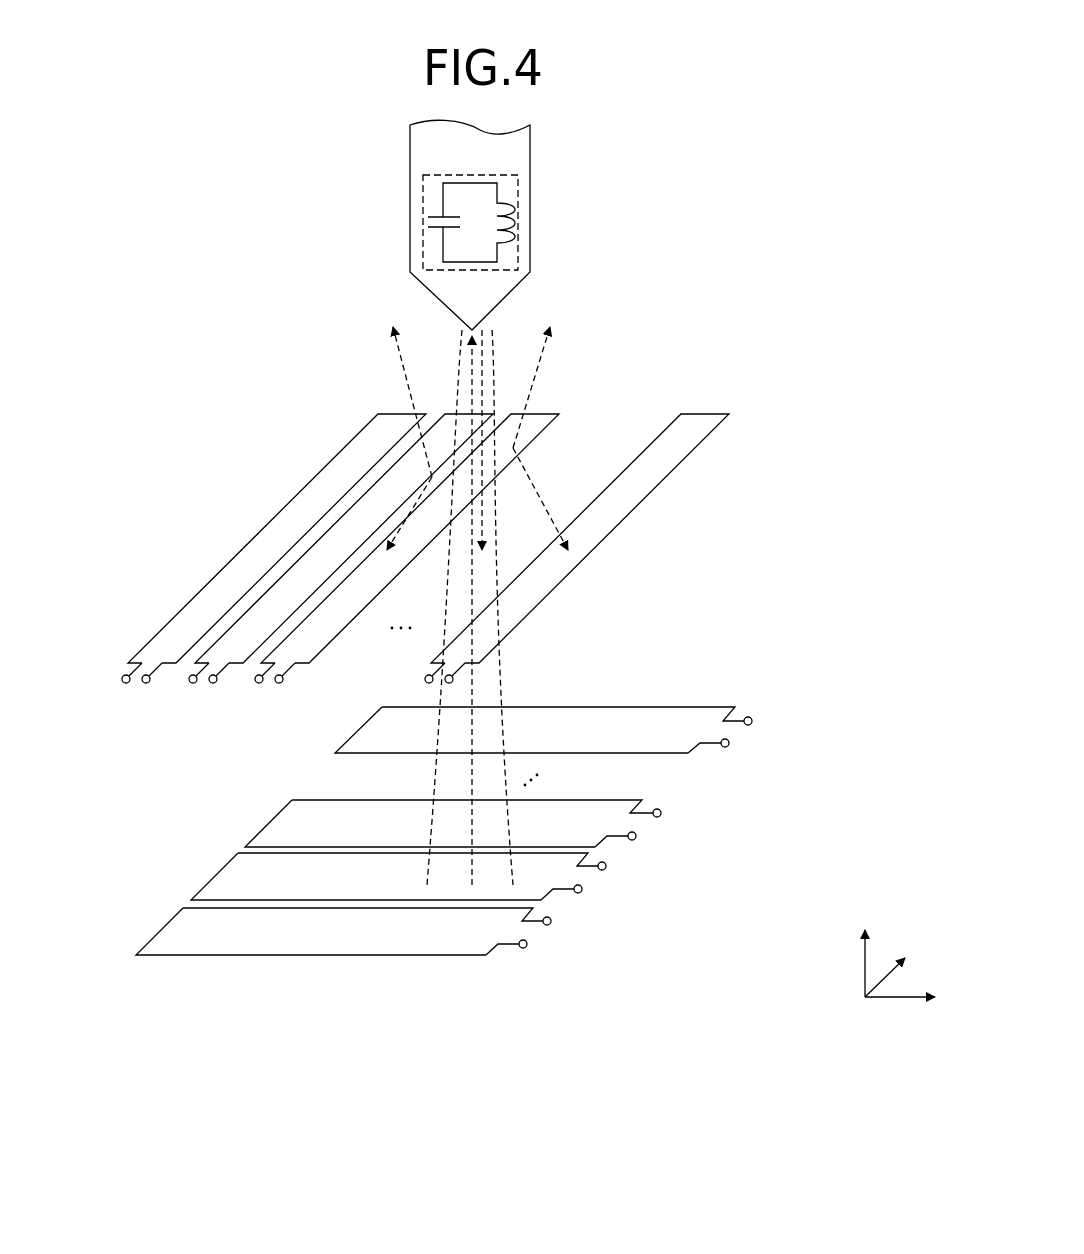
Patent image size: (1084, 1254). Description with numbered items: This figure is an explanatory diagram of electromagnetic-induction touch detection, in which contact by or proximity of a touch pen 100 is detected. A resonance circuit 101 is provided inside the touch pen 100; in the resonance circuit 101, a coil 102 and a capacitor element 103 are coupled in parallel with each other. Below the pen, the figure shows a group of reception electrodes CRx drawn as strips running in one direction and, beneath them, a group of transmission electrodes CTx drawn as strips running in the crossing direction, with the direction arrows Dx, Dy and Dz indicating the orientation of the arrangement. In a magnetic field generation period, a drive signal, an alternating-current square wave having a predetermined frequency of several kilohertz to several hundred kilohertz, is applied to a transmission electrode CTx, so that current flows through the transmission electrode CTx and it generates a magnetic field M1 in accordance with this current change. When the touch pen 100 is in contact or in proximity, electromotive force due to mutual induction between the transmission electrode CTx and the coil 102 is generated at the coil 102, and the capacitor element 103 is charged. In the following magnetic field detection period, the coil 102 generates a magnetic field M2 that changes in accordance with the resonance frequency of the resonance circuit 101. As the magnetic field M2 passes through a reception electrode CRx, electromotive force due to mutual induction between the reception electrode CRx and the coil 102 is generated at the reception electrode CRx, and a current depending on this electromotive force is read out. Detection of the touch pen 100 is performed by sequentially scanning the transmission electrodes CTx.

The touch pen 100 is at (531, 152).
The resonance circuit 101 is at (518, 252).
The coil 102 is at (514, 211).
The capacitor element 103 is at (443, 218).
The magnetic field M1 is at (545, 348).
The magnetic field M2 is at (493, 338).
The reception electrode CRx is at (318, 533).
The transmission electrode CTx is at (352, 745).
The X direction Dx is at (917, 1003).
The Y direction Dy is at (887, 967).
The Z direction Dz is at (865, 977).